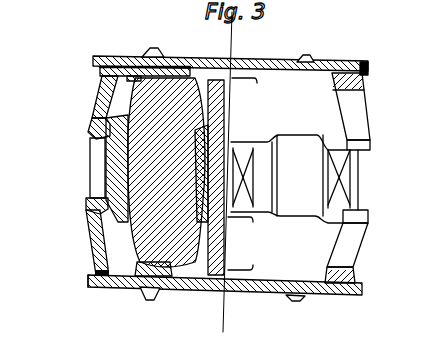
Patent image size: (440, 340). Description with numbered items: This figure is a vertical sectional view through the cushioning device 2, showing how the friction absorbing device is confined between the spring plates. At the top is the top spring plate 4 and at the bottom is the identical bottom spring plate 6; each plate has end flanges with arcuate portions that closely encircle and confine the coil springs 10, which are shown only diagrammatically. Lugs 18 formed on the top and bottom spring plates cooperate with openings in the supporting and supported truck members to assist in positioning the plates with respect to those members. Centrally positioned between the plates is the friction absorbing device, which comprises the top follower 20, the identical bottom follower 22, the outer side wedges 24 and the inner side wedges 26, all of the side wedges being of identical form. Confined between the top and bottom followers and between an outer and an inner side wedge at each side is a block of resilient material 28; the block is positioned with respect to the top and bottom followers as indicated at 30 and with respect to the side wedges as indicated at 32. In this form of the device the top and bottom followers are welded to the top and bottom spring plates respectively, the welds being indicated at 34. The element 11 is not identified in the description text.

The cushioning device 2 is at (86, 288).
The top spring plate 4 is at (252, 62).
The bottom spring plate 6 is at (322, 284).
The coil springs 10 is at (319, 166).
The lip 11 is at (86, 118).
The lugs 18 is at (152, 50).
The top follower 20 is at (100, 95).
The bottom follower 22 is at (92, 233).
The outer side wedges 24 is at (107, 163).
The inner side wedges 26 is at (190, 92).
The block of resilient material 28 is at (218, 248).
The positioning of block with respect to followers 30 is at (128, 77).
The positioning of block with respect to side wedges 32 is at (110, 173).
The welds 34 is at (93, 66).